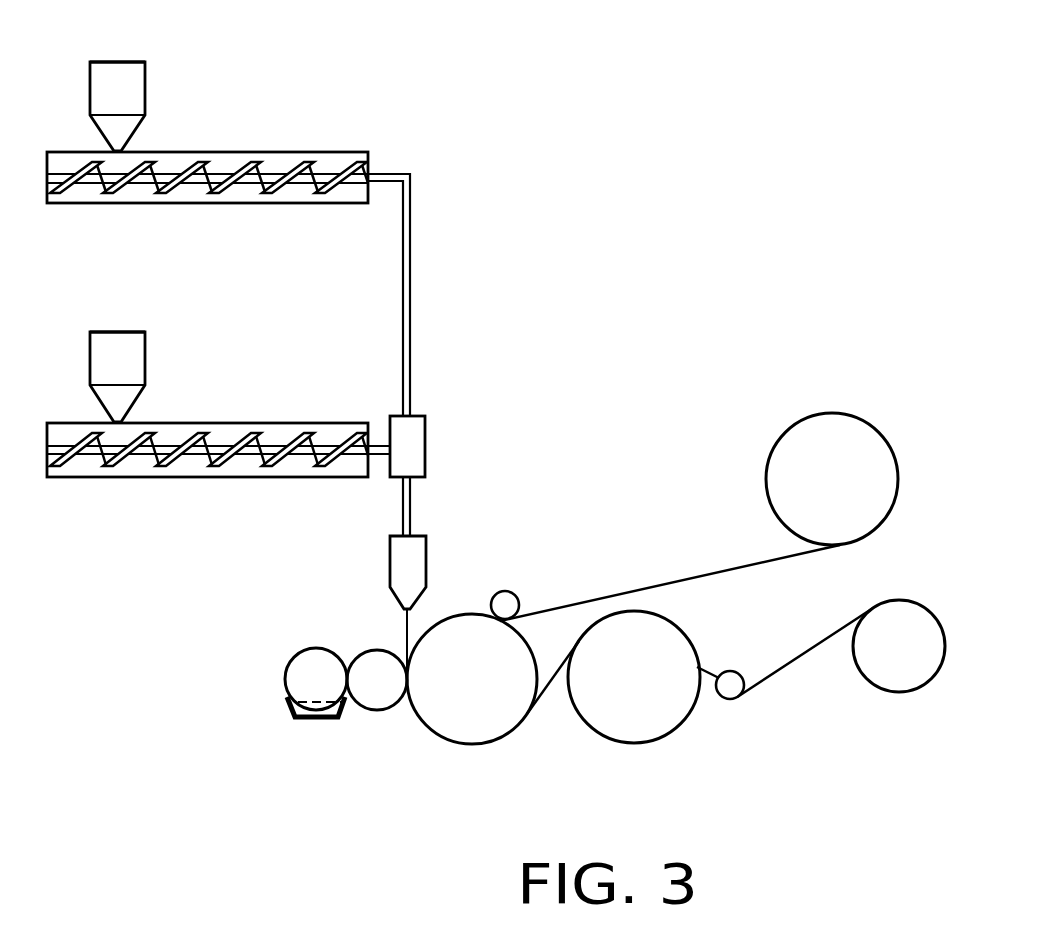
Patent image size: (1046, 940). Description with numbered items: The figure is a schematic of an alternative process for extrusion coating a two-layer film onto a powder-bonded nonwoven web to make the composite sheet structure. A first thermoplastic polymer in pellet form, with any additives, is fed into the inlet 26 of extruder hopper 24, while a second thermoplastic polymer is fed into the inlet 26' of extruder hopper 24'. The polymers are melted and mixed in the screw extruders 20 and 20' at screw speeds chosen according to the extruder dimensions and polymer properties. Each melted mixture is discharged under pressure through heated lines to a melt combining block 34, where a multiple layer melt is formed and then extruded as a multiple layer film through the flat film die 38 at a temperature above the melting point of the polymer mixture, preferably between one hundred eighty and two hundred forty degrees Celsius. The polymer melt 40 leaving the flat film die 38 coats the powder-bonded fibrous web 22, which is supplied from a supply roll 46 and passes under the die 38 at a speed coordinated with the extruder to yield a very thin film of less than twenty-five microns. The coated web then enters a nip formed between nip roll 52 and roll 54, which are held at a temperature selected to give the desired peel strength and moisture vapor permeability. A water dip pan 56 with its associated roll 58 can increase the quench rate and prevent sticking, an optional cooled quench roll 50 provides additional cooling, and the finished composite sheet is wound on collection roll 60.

The screw extruder 20 is at (209, 160).
The screw extruder 20' is at (211, 429).
The powder-bonded fibrous web 22 is at (697, 575).
The extruder hopper 24 is at (144, 106).
The extruder hopper 24' is at (149, 377).
The inlet 26 is at (135, 43).
The inlet 26' is at (140, 310).
The melt combining block 34 is at (428, 417).
The flat film die 38 is at (428, 537).
The polymer melt 40 is at (405, 626).
The supply roll 46 is at (825, 413).
The cooled quench roll 50 is at (633, 744).
The nip roll 52 is at (380, 711).
The roll 54 is at (470, 745).
The water dip pan 56 is at (292, 713).
The roll 58 is at (290, 666).
The collection roll 60 is at (900, 692).